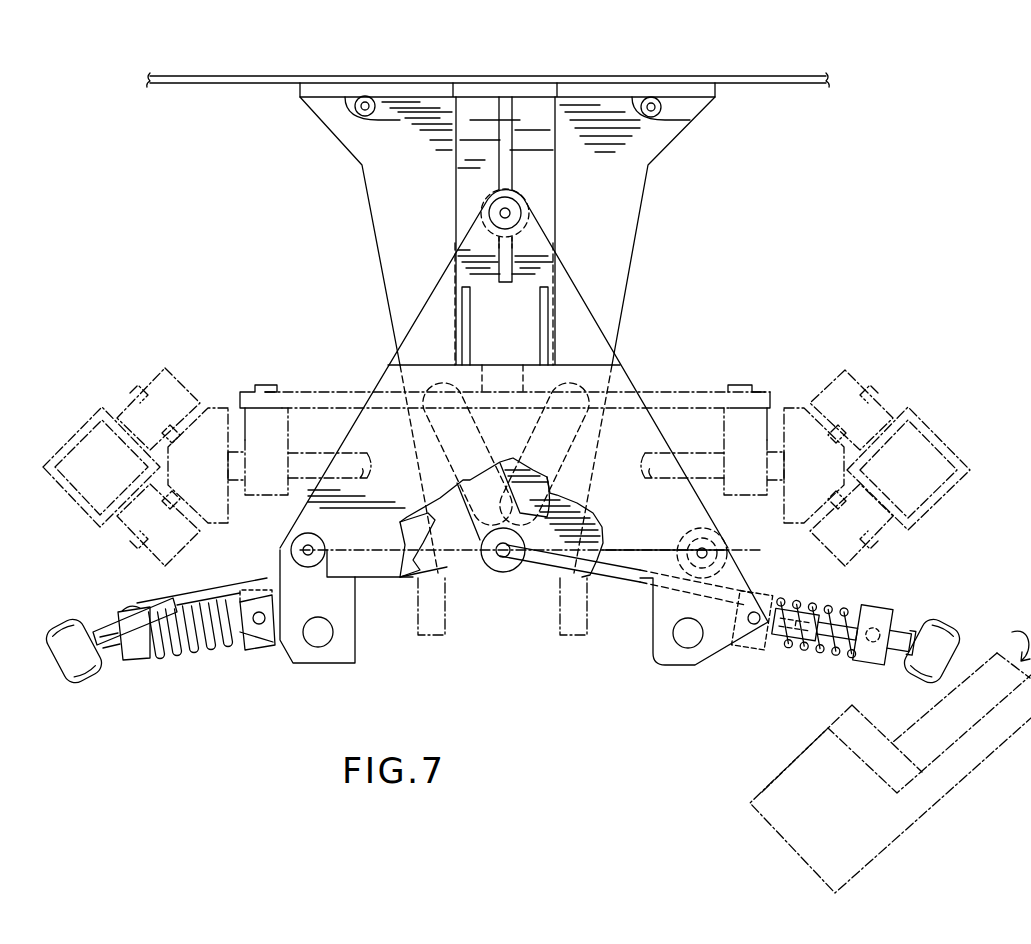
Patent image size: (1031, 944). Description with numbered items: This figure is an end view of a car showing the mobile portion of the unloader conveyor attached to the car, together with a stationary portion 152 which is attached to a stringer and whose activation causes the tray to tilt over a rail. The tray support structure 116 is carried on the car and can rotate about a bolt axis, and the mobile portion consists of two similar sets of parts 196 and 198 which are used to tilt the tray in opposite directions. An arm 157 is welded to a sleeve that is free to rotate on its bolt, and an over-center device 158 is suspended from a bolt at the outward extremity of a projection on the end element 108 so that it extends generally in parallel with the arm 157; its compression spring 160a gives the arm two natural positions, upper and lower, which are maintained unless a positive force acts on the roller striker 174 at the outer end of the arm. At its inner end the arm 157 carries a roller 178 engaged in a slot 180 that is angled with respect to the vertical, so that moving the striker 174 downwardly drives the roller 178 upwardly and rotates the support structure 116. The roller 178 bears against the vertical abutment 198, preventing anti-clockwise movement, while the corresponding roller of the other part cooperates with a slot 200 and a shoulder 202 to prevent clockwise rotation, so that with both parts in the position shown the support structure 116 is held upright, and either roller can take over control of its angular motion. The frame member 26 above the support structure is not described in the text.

The frame bar 26 is at (793, 77).
The tray support structure 116 is at (641, 214).
The end element 108 is at (435, 317).
The slot 200 is at (637, 410).
The slot 180 is at (483, 438).
The roller 178 is at (502, 568).
The shoulder 202 is at (547, 542).
The arm 157 is at (560, 615).
The vertical abutment 198 is at (201, 666).
The mobile portion parts 196 is at (698, 683).
The spring 160a is at (808, 603).
The over-center device 158 is at (887, 597).
The roller striker 174 is at (943, 627).
The stationary portion 152 is at (933, 800).